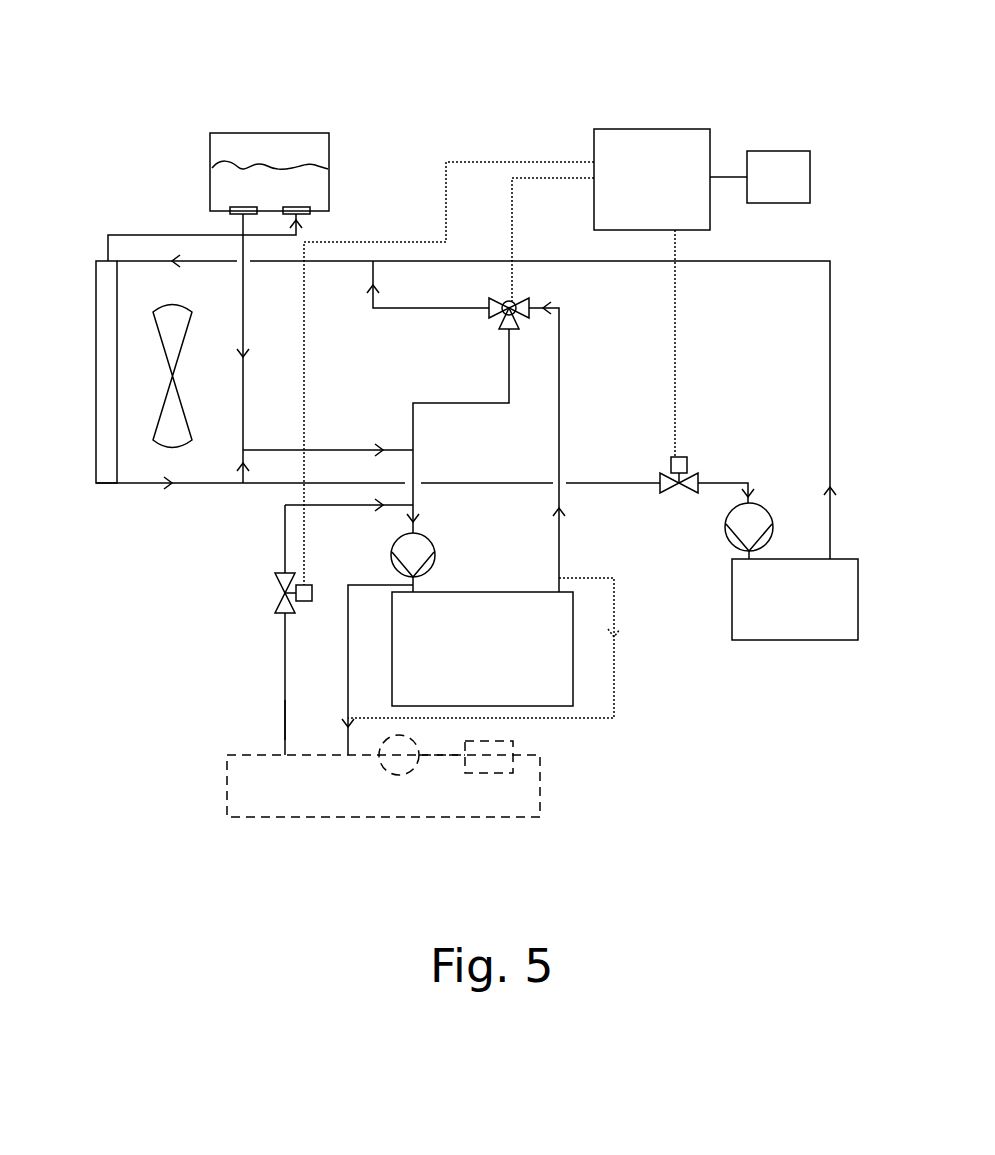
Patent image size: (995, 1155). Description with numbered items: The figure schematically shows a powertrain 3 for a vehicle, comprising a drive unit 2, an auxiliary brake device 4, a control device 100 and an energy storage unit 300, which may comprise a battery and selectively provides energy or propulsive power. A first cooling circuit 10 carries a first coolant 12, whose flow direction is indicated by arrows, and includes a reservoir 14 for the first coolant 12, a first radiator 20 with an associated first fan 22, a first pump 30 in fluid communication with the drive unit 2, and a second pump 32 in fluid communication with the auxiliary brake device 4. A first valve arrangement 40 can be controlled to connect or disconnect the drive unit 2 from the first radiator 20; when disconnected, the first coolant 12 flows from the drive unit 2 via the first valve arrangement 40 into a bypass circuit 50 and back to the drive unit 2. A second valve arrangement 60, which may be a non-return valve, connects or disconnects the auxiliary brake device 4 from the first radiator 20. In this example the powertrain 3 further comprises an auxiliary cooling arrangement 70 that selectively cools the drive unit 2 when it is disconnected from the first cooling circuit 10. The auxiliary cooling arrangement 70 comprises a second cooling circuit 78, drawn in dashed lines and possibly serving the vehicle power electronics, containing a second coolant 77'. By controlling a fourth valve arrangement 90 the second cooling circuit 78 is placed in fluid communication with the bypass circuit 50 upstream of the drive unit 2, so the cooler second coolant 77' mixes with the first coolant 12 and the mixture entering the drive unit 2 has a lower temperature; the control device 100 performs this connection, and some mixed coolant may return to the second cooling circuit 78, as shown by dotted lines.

The powertrain 3 is at (757, 98).
The first coolant 12 is at (212, 190).
The reservoir 14 is at (329, 147).
The first radiator 20 is at (96, 365).
The first cooling circuit 10 is at (222, 497).
The first fan 22 is at (178, 350).
The first valve arrangement 40 is at (506, 301).
The bypass circuit 50 is at (466, 405).
The first pump 30 is at (391, 551).
The drive unit 2 is at (482, 649).
The auxiliary brake device 4 is at (795, 599).
The second valve arrangement 60 is at (668, 467).
The second pump 32 is at (725, 530).
The control device 100 is at (507, 357).
The energy storage unit 300 is at (760, 177).
The auxiliary cooling arrangement 70 is at (263, 634).
The fourth valve arrangement 90 is at (280, 596).
The second coolant 77' is at (248, 722).
The second cooling circuit 78 is at (383, 776).